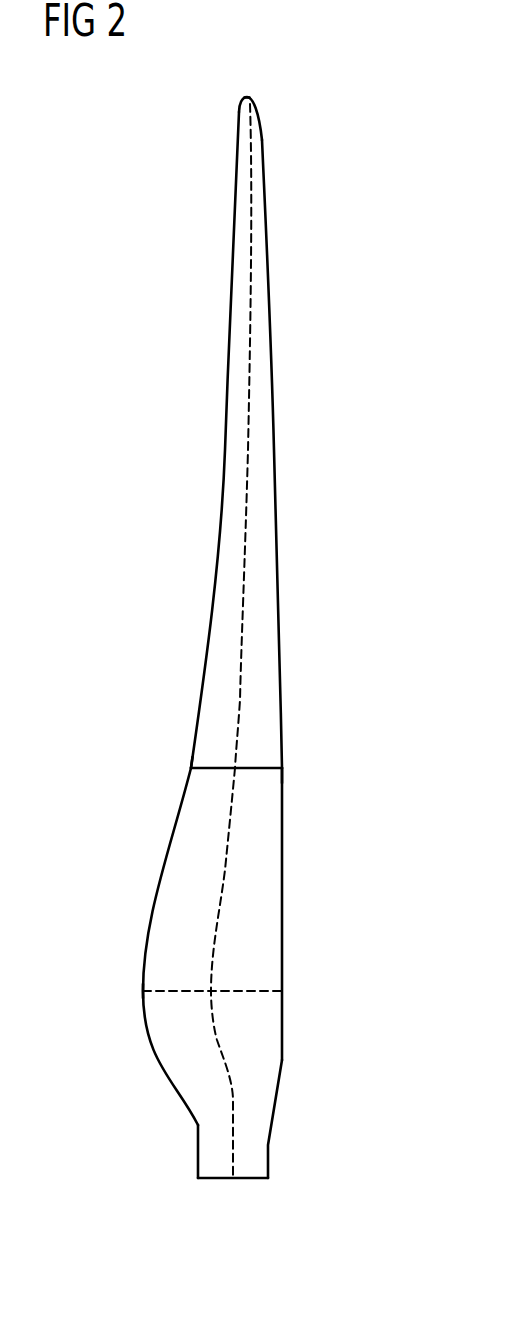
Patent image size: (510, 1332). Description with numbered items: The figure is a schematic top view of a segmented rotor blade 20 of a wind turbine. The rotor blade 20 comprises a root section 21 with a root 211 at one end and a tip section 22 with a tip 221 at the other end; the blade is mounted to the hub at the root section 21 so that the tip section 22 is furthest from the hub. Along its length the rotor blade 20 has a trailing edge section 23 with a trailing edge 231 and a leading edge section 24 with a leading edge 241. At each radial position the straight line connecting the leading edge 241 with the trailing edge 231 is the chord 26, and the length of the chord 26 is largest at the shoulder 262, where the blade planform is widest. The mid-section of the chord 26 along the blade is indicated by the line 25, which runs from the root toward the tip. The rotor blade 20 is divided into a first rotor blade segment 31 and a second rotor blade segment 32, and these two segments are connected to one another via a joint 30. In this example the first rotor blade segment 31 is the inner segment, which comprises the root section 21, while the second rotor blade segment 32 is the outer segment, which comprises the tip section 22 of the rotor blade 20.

The rotor blade 20 is at (362, 393).
The root section 21 is at (258, 1140).
The root 211 is at (222, 1180).
The tip section 22 is at (240, 116).
The tip 221 is at (247, 97).
The trailing edge section 23 is at (210, 702).
The trailing edge 231 is at (192, 757).
The leading edge section 24 is at (269, 736).
The leading edge 241 is at (283, 783).
The line 25 is at (241, 680).
The chord 26 is at (252, 990).
The shoulder 262 is at (143, 991).
The joint 30 is at (226, 770).
The first rotor blade segment 31 is at (108, 866).
The second rotor blade segment 32 is at (138, 447).